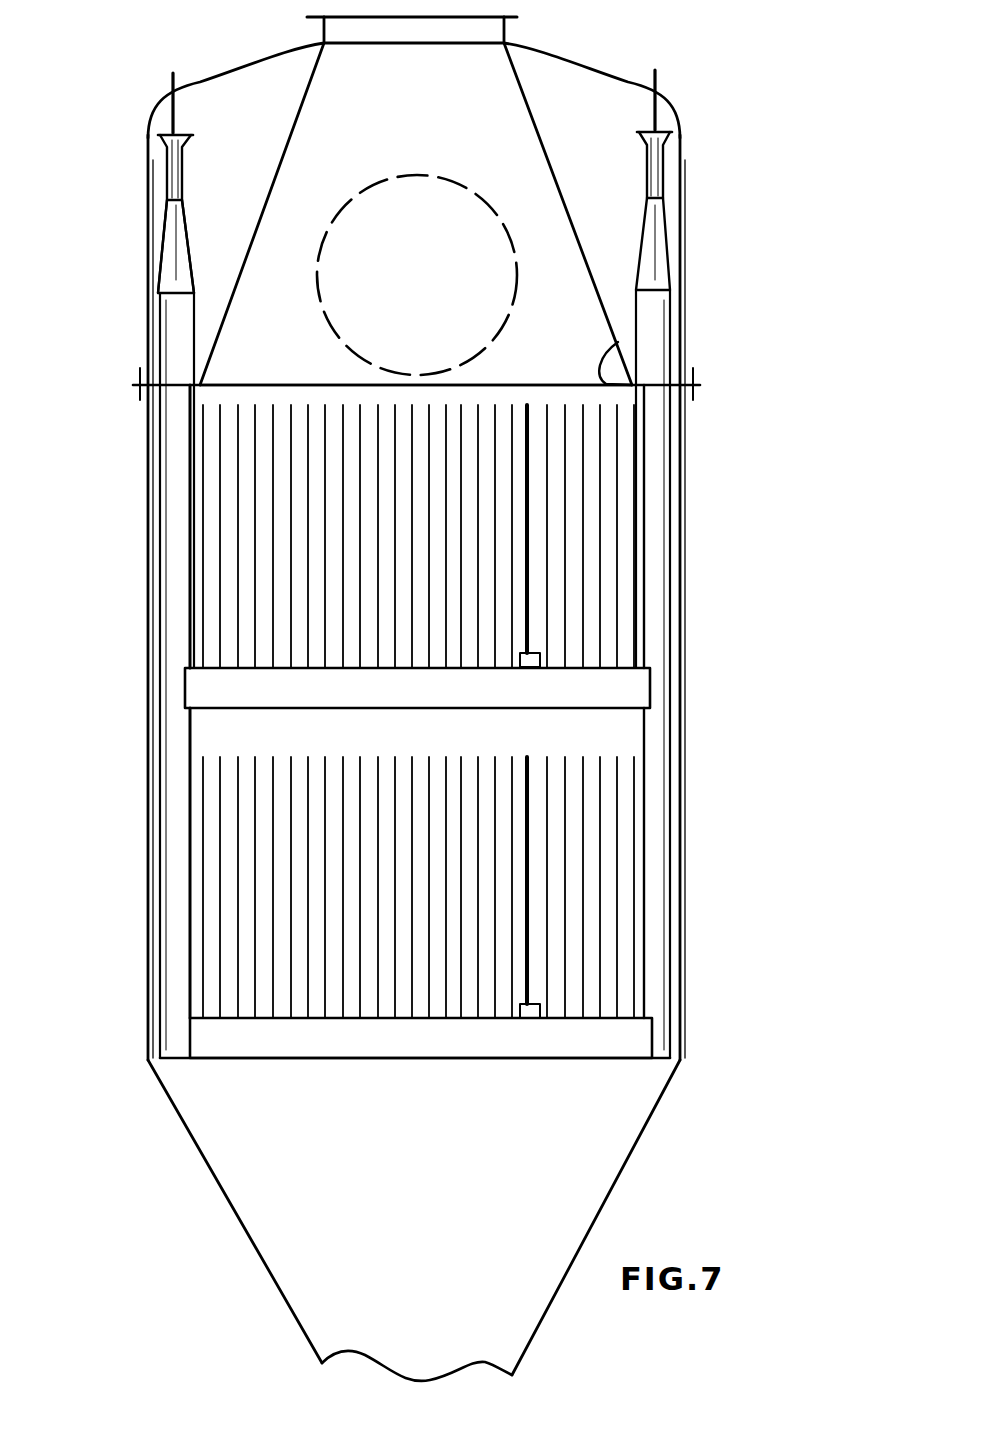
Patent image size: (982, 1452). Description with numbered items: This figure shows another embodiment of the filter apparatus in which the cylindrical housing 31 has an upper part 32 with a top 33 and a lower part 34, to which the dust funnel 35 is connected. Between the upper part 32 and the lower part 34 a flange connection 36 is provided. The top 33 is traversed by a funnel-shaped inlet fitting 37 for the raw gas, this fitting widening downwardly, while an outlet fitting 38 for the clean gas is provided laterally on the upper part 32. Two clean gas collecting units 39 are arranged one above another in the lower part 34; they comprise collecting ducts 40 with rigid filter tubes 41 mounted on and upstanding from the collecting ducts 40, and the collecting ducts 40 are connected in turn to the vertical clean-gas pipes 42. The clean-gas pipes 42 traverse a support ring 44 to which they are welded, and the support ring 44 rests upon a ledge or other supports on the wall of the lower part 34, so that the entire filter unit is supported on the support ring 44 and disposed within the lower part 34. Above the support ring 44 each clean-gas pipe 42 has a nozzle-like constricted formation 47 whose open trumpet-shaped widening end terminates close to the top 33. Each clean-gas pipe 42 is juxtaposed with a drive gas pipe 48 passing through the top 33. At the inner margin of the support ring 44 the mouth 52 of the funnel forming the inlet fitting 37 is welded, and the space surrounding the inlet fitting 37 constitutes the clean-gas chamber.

The cylindrical housing 31 is at (128, 684).
The upper part 32 is at (148, 200).
The top 33 is at (608, 68).
The lower part 34 is at (148, 888).
The dust funnel 35 is at (237, 1218).
The flange connection 36 is at (118, 386).
The funnel-shaped inlet fitting 37 is at (505, 33).
The outlet fitting 38 is at (510, 228).
The clean gas collecting unit 39 is at (640, 692).
The collecting duct 40 is at (210, 1038).
The rigid filter tube 41 is at (478, 497).
The clean-gas pipe 42 is at (178, 808).
The support ring 44 is at (247, 385).
The nozzle-like constricted formation 47 is at (172, 258).
The drive gas pipe 48 is at (657, 76).
The mouth 52 is at (606, 350).